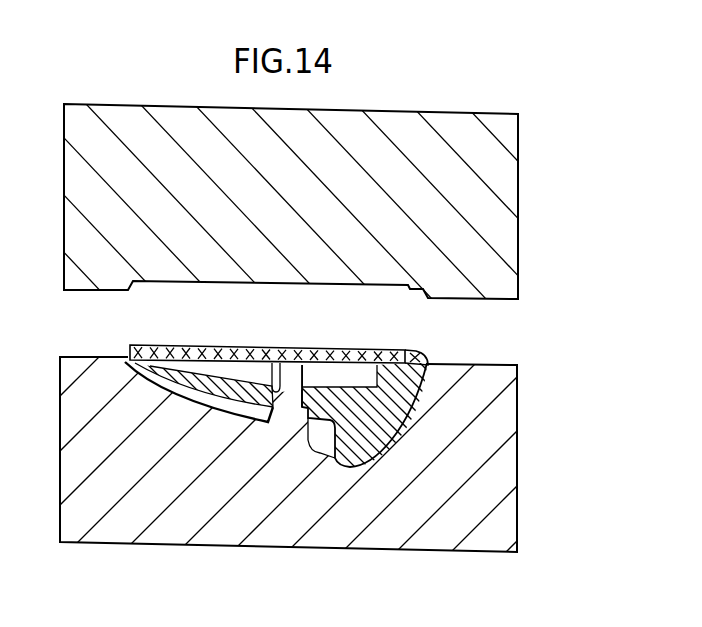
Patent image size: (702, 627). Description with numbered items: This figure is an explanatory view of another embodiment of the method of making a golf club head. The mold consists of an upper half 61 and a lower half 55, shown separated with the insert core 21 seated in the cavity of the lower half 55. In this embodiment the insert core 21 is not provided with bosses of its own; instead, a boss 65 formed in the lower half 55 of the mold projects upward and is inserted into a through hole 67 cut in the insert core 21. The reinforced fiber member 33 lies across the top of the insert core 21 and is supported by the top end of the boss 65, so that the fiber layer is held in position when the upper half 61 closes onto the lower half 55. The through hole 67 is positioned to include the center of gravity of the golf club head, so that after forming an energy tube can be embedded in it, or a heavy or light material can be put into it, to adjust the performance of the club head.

The upper mold half 61 is at (513, 205).
The lower half of the mold 55 is at (500, 470).
The insert core 21 is at (413, 353).
The boss 65 is at (292, 368).
The through hole 67 is at (273, 364).
The reinforced fiber member 33 is at (210, 350).